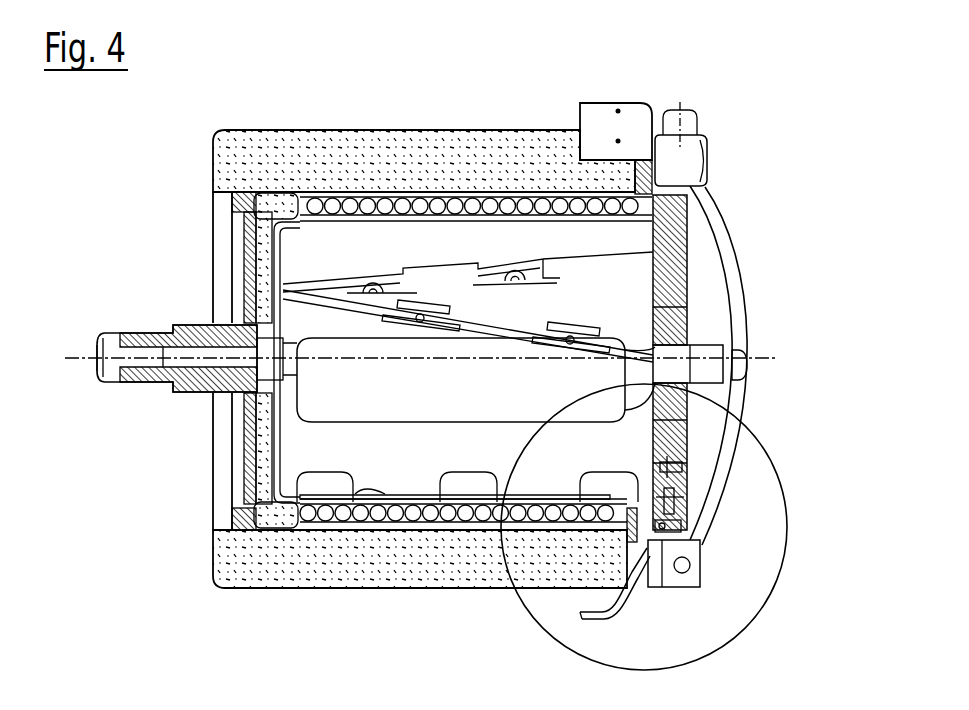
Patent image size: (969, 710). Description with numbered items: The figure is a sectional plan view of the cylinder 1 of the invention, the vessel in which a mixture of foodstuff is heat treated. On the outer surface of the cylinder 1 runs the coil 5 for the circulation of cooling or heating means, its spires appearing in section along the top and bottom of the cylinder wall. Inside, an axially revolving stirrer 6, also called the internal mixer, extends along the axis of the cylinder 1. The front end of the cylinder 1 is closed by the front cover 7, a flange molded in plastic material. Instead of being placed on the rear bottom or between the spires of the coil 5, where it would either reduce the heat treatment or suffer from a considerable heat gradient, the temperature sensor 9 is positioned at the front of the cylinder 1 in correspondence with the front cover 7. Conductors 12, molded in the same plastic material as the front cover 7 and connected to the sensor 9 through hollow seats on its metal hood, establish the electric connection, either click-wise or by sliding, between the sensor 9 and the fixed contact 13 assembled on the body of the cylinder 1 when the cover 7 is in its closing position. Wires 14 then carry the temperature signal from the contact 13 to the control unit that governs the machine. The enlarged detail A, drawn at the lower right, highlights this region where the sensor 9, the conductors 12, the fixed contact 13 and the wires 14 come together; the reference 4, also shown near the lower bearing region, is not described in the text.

The cylinder 1 is at (259, 83).
The bearing shield 4 is at (367, 497).
The coil 5 is at (422, 516).
The stirrer 6 is at (300, 354).
The front cover 7 is at (675, 268).
The temperature sensor 9 is at (677, 468).
The conductors 12 is at (670, 502).
The fixed contact 13 is at (672, 528).
The wires 14 is at (613, 602).
The detail region A is at (770, 446).